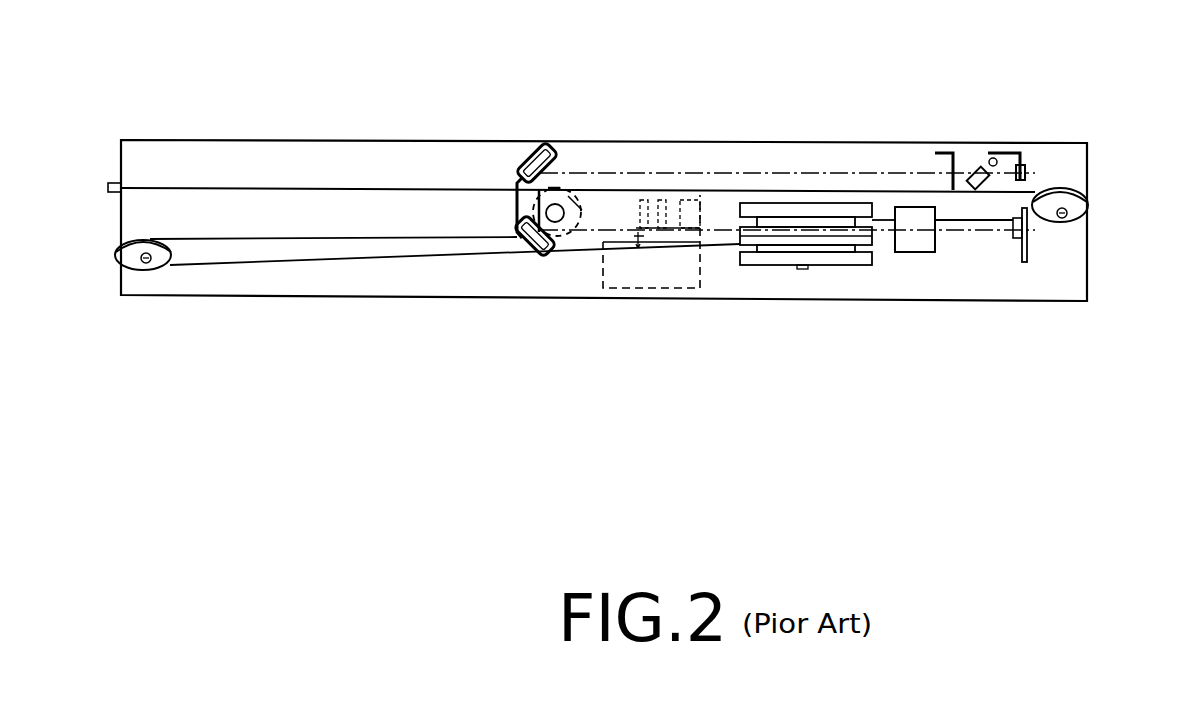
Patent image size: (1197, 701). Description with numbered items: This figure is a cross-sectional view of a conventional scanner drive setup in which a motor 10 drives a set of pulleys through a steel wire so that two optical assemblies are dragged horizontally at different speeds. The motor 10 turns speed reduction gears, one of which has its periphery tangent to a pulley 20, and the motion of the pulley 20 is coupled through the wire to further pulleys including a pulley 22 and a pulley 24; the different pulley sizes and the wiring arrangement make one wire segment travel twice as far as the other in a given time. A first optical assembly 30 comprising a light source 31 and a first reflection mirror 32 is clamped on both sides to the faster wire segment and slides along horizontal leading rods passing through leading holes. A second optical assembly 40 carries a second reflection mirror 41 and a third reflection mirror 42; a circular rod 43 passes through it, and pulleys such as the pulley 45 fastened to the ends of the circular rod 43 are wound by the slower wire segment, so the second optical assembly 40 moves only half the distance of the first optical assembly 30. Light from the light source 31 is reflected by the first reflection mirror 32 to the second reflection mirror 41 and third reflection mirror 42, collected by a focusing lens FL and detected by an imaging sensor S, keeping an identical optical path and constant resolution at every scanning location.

The motor 10 is at (690, 272).
The pulley 20 is at (803, 208).
The pulley 22 is at (1078, 207).
The pulley 24 is at (125, 255).
The first optical assembly 30 is at (1020, 153).
The light source 31 is at (1005, 152).
The first reflection mirror 32 is at (978, 170).
The second optical assembly 40 is at (512, 212).
The second reflection mirror 41 is at (543, 160).
The third reflection mirror 42 is at (540, 248).
The circular rod 43 is at (560, 222).
The pulley 45 is at (573, 203).
The focusing lens FL is at (922, 243).
The imaging sensor S is at (1017, 237).